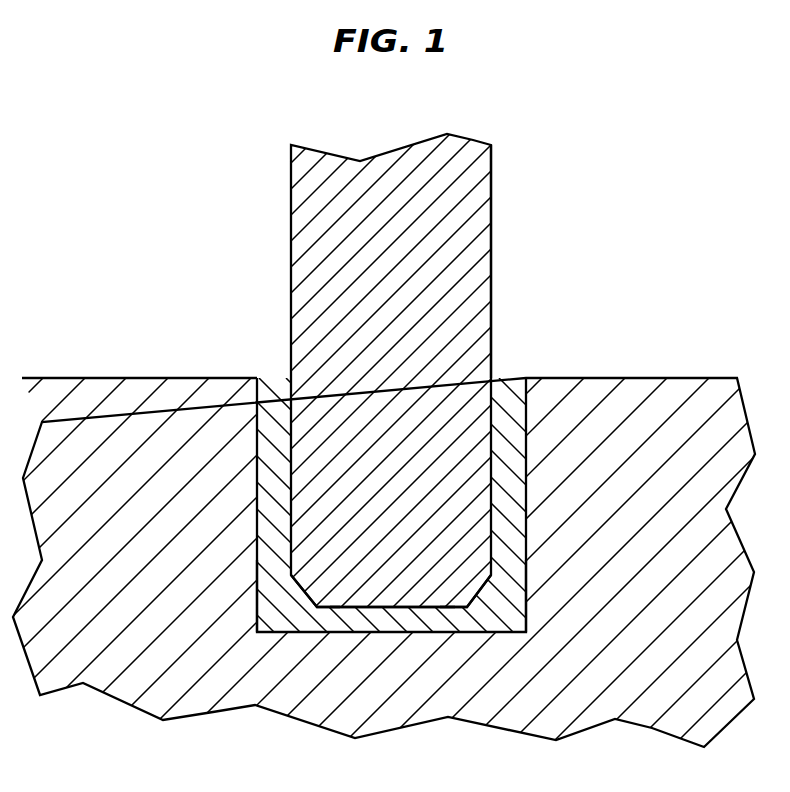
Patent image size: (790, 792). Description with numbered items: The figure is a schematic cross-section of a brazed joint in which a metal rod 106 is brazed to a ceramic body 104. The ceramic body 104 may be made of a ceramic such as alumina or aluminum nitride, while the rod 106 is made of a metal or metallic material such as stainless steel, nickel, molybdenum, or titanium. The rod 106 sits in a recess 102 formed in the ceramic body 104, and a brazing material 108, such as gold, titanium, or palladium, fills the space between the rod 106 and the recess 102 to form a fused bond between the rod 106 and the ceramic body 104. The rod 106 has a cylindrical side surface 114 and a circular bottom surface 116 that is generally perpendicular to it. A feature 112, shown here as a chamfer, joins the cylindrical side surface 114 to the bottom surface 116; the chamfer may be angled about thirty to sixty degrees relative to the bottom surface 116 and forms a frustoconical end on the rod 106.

The recess 102 is at (525, 486).
The ceramic body 104 is at (678, 397).
The rod 106 is at (477, 223).
The brazing material 108 is at (517, 620).
The feature 112 is at (287, 585).
The cylindrical side surface 114 is at (492, 315).
The bottom surface 116 is at (435, 606).